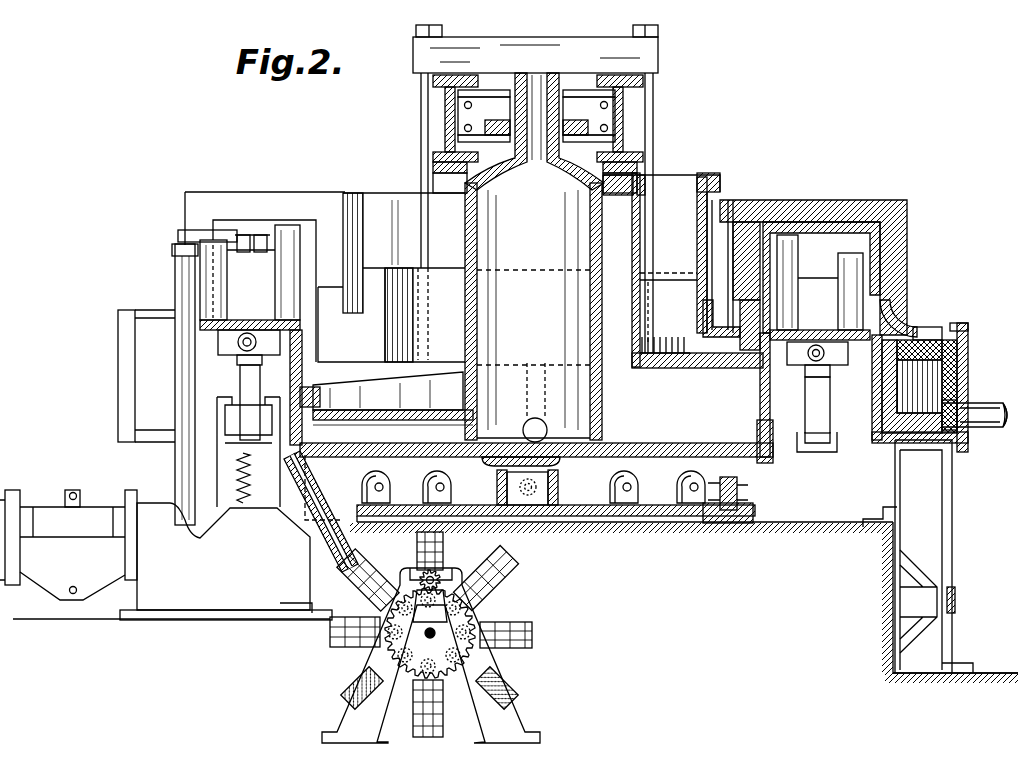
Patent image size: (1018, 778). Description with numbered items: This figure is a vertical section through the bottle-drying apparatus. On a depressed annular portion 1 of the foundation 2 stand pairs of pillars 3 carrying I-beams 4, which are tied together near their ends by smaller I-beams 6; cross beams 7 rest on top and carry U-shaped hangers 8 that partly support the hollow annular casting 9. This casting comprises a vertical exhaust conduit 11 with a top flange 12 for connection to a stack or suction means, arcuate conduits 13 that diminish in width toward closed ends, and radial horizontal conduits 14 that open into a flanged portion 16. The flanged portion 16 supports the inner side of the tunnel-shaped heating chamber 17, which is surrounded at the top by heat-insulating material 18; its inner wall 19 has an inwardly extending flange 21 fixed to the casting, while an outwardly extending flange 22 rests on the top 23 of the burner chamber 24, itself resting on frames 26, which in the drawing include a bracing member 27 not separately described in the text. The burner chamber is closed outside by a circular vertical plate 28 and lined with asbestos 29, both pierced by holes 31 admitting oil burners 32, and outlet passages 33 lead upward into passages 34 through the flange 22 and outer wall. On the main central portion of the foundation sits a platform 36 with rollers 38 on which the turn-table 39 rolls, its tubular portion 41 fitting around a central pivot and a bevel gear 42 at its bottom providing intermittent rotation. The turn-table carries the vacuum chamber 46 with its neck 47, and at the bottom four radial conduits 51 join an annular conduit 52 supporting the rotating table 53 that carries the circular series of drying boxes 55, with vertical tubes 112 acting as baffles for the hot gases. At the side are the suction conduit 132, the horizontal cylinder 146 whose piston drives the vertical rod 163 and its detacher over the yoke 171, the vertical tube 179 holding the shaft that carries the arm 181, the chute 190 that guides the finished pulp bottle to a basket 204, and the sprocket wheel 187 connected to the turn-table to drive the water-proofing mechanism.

The depressed annular portion 1 is at (920, 675).
The foundation 2 is at (668, 525).
The pillars 3 is at (539, 178).
The I-beams 4 is at (445, 138).
The smaller I-beams 6 is at (593, 96).
The cross beams 7 is at (535, 49).
The U-shaped hangers 8 is at (421, 150).
The hollow annular casting 9 is at (391, 277).
The vertical exhaust conduit 11 is at (669, 270).
The flange 12 is at (722, 183).
The conduits 13 is at (663, 313).
The horizontal conduits 14 is at (690, 342).
The flanged portion 16 is at (760, 340).
The tunnel-shaped heating chamber 17 is at (865, 234).
The heat-insulating material 18 is at (888, 200).
The inner wall 19 is at (745, 270).
The inwardly extending flange 21 is at (727, 330).
The outwardly extending flange 22 is at (932, 328).
The top of burner chamber 23 is at (962, 327).
The burner chamber 24 is at (919, 386).
The frames 26 is at (942, 505).
The brace 27 is at (893, 580).
The circular vertically extending plate 28 is at (957, 367).
The asbestos 29 is at (950, 388).
The holes 31 is at (965, 434).
The oil burners 32 is at (980, 425).
The outlet passages 33 is at (919, 358).
The passages 34 is at (908, 312).
The platform 36 is at (755, 512).
The rollers 38 is at (745, 497).
The turn-table 39 is at (590, 470).
The tubular portion 41 is at (497, 480).
The bevel gear 42 is at (762, 460).
The vacuum chamber 46 is at (533, 311).
The neck 47 is at (560, 140).
The radially extending conduits 51 is at (545, 424).
The annular conduit 52 is at (322, 400).
The table 53 is at (302, 368).
The drying boxes 55 is at (535, 295).
The vertical tubes 112 is at (275, 268).
The suction conduit 132 is at (240, 376).
The horizontal cylinder 146 is at (68, 545).
The vertical rod 163 is at (245, 505).
The yoke 171 is at (845, 450).
The vertical tube 179 is at (175, 384).
The arm 181 is at (208, 230).
The sprocket wheel 187 is at (445, 570).
The chute 190 is at (337, 567).
The baskets 204 is at (416, 560).